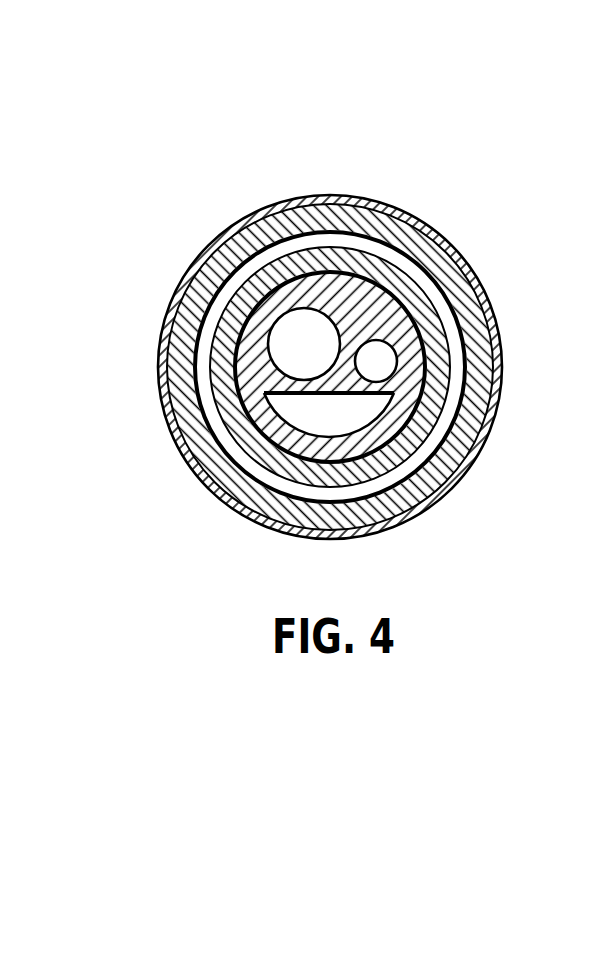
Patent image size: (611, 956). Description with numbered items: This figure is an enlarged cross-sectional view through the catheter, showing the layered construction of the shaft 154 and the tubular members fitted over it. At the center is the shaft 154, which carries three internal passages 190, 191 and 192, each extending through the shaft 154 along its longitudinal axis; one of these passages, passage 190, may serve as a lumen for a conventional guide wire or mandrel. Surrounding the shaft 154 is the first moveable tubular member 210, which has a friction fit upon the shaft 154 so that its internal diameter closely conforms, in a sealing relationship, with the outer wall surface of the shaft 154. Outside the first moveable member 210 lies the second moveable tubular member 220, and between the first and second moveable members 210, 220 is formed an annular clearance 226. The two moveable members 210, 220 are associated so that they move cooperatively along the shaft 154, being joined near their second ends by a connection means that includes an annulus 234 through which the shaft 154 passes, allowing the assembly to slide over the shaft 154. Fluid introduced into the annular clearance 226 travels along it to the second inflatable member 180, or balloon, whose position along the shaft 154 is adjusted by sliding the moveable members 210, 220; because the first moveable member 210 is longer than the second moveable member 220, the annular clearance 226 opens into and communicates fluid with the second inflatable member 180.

The second inflatable member 180 is at (323, 195).
The shaft 154 is at (265, 310).
The annulus 234 is at (430, 492).
The second moveable tubular member 220 is at (375, 227).
The annular clearance 226 is at (410, 263).
The first moveable tubular member 210 is at (427, 327).
The internal passage 190 is at (283, 347).
The internal passage 191 is at (385, 363).
The internal passage 192 is at (303, 417).